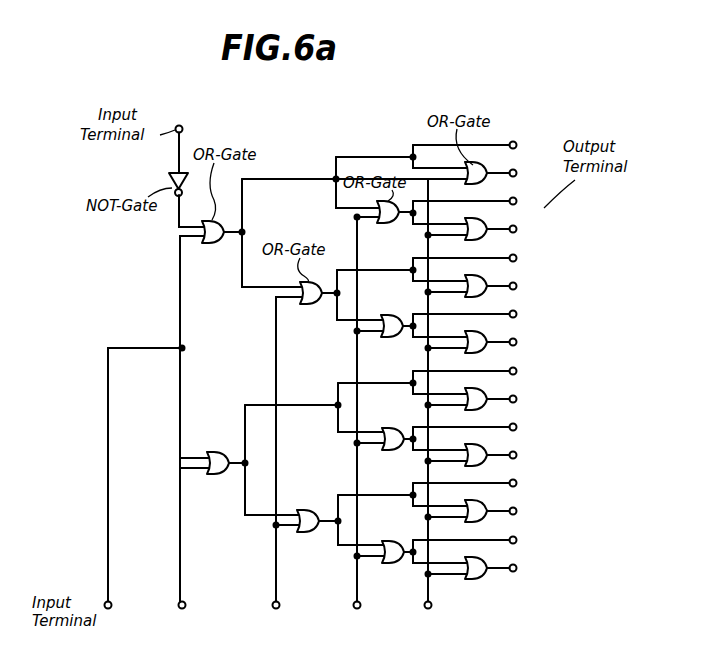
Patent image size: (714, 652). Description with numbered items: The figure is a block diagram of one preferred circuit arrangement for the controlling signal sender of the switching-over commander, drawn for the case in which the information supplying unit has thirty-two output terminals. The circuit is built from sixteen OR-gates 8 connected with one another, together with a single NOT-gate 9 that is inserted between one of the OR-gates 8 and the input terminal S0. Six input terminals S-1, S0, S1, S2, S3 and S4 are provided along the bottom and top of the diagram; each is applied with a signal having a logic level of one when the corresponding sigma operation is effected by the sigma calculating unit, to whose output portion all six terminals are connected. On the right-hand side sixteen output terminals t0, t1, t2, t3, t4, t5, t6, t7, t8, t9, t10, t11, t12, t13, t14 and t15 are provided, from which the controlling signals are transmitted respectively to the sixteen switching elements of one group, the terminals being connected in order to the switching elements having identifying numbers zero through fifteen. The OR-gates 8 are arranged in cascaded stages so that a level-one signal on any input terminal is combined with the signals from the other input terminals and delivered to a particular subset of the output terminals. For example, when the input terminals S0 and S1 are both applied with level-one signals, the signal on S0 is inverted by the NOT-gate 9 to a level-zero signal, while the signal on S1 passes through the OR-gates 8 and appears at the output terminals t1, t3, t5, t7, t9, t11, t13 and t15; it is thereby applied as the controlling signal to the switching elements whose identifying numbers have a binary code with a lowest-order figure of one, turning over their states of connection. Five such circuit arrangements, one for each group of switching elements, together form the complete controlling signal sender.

The OR-gate 8 is at (216, 244).
The NOT-gate 9 is at (170, 177).
The input terminal S0 is at (176, 120).
The input terminal S-1 is at (120, 616).
The input terminal S1 is at (431, 616).
The input terminal S2 is at (359, 616).
The input terminal S3 is at (276, 616).
The input terminal S4 is at (183, 616).
The output terminal t0 is at (524, 149).
The output terminal t1 is at (524, 177).
The output terminal t2 is at (524, 205).
The output terminal t3 is at (524, 233).
The output terminal t4 is at (524, 262).
The output terminal t5 is at (524, 290).
The output terminal t6 is at (524, 318).
The output terminal t7 is at (524, 346).
The output terminal t8 is at (524, 375).
The output terminal t9 is at (524, 403).
The output terminal t10 is at (530, 431).
The output terminal t11 is at (530, 459).
The output terminal t12 is at (530, 487).
The output terminal t13 is at (530, 515).
The output terminal t14 is at (530, 544).
The output terminal t15 is at (530, 572).